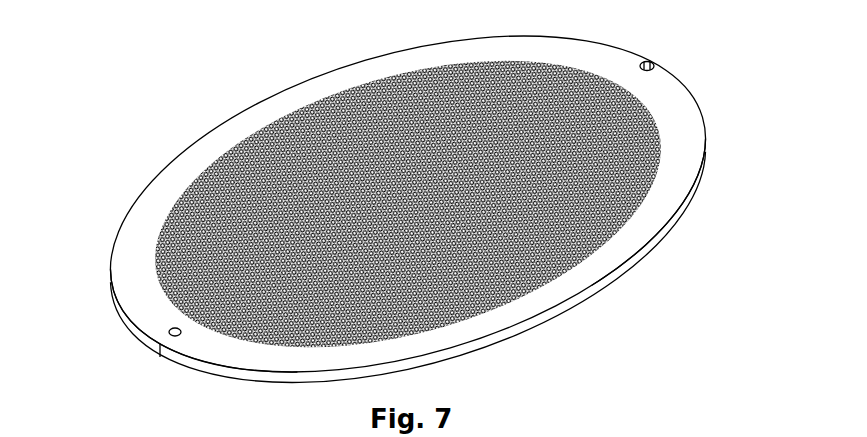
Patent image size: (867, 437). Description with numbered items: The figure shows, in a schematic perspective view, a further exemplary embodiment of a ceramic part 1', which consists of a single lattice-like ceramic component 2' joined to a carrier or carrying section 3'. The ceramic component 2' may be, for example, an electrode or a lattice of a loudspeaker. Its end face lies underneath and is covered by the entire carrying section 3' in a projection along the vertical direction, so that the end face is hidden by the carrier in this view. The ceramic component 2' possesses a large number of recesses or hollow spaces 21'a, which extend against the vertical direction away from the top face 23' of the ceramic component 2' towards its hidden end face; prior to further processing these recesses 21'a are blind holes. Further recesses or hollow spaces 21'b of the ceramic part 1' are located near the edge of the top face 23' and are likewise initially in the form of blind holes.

The ceramic part 1' is at (408, 217).
The ceramic component 2' is at (651, 212).
The carrying section 3' is at (411, 267).
The recesses 21'a is at (407, 206).
The further recesses 21'b is at (390, 191).
The top face 23' is at (203, 332).